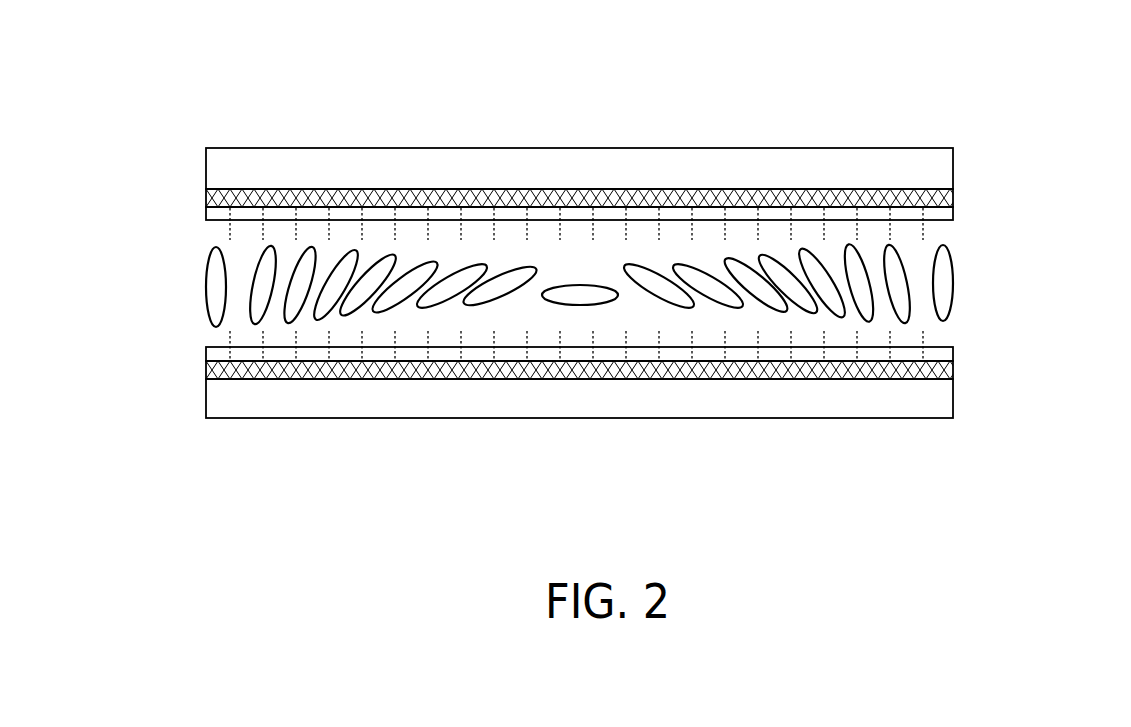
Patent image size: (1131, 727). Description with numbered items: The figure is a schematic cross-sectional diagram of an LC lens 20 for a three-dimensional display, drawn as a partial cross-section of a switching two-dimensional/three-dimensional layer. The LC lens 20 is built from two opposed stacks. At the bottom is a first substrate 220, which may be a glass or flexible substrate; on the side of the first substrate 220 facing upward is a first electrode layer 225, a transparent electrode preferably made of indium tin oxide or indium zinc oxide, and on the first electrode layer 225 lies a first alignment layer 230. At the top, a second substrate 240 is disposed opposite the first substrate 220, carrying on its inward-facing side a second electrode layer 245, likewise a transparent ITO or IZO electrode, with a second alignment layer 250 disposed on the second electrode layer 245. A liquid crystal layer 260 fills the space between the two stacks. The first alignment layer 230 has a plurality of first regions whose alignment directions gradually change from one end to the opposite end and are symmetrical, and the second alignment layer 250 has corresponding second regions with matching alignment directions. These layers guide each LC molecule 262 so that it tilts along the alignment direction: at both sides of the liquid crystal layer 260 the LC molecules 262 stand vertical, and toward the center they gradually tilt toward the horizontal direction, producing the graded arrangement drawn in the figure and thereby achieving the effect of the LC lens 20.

The LC lens 20 is at (105, 62).
The first substrate 220 is at (207, 403).
The first electrode layer 225 is at (953, 368).
The first alignment layer 230 is at (942, 352).
The second substrate 240 is at (206, 167).
The second electrode layer 245 is at (953, 190).
The second alignment layer 250 is at (941, 213).
The liquid crystal layer 260 is at (528, 310).
The LC molecule 262 is at (190, 235).